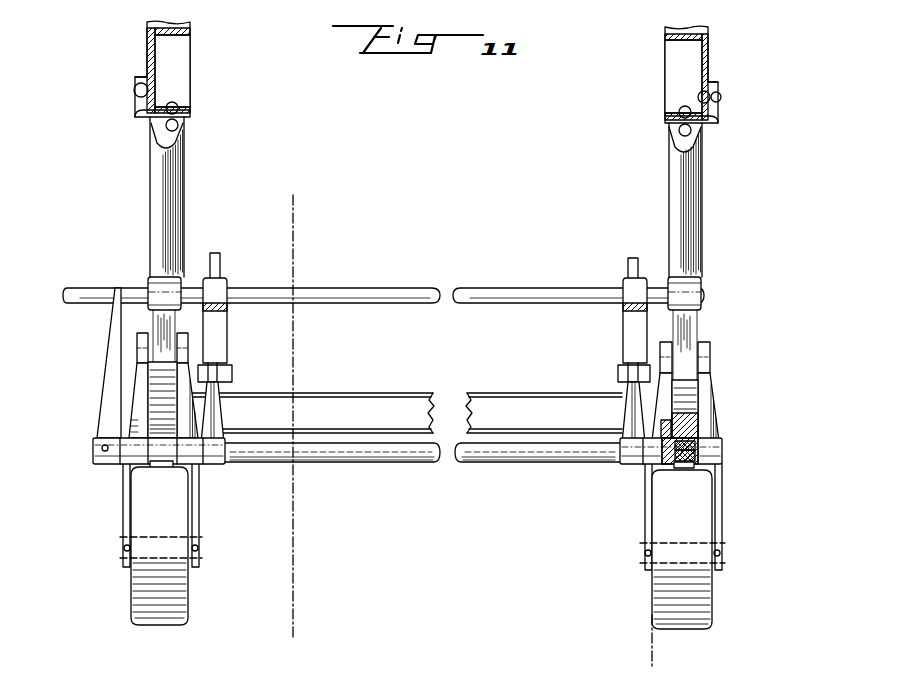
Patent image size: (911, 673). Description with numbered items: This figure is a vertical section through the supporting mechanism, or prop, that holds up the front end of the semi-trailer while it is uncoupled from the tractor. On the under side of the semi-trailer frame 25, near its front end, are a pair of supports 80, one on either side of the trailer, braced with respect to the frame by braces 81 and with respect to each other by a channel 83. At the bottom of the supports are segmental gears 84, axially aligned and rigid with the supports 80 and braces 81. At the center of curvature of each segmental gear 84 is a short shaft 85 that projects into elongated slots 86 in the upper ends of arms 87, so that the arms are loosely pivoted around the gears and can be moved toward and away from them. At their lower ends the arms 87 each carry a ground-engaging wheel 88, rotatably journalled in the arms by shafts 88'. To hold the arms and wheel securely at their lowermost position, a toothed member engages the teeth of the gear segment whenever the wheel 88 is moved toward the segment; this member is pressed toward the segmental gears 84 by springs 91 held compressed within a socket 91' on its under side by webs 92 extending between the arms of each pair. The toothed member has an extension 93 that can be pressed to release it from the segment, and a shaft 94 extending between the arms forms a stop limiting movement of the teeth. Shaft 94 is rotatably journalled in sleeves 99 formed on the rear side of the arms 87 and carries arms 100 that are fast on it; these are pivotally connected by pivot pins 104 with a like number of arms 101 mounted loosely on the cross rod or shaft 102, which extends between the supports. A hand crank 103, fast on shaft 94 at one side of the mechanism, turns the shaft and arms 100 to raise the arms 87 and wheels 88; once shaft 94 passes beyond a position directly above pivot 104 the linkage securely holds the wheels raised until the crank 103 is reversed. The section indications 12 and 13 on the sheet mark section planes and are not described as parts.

The frame 25 is at (178, 82).
The supports 80 is at (151, 190).
The braces 81 is at (172, 192).
The shaft 102 is at (252, 292).
The arms 101 is at (220, 350).
The pivot pins 104 is at (233, 375).
The arms 100 is at (222, 421).
The channel 83 is at (388, 403).
The shaft 94 is at (375, 452).
The short shaft 85 is at (176, 360).
The elongated slots 86 is at (138, 345).
The segmental gears 84 is at (160, 400).
The hand crank 103 is at (121, 350).
The arms 87 is at (140, 392).
The sleeves 99 is at (130, 463).
The extension 93 is at (163, 486).
The webs 92 is at (681, 468).
The springs 91 is at (717, 460).
The socket 91' is at (722, 440).
The wheel 88 is at (421, 548).
The shafts 88' is at (425, 550).
The section line 12 is at (304, 250).
The section line 13 is at (689, 334).